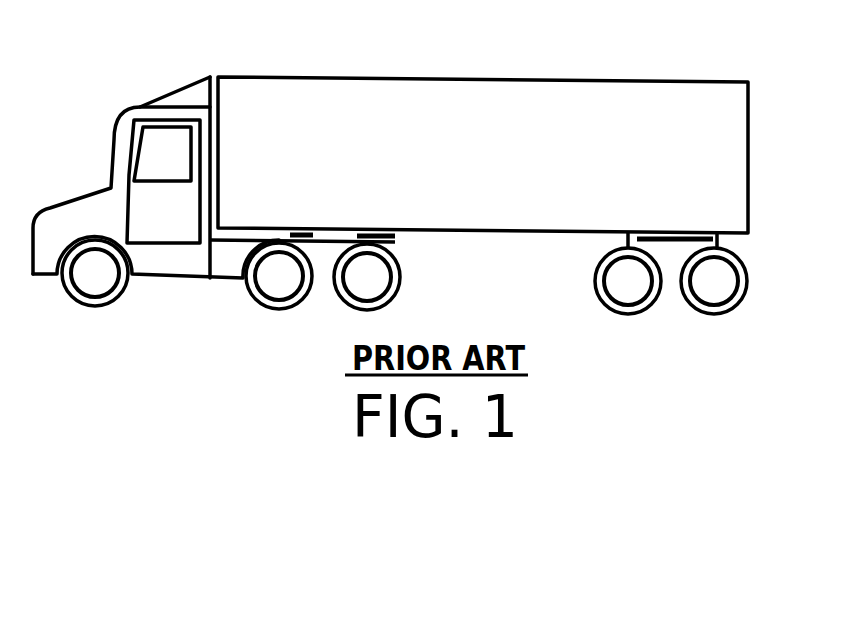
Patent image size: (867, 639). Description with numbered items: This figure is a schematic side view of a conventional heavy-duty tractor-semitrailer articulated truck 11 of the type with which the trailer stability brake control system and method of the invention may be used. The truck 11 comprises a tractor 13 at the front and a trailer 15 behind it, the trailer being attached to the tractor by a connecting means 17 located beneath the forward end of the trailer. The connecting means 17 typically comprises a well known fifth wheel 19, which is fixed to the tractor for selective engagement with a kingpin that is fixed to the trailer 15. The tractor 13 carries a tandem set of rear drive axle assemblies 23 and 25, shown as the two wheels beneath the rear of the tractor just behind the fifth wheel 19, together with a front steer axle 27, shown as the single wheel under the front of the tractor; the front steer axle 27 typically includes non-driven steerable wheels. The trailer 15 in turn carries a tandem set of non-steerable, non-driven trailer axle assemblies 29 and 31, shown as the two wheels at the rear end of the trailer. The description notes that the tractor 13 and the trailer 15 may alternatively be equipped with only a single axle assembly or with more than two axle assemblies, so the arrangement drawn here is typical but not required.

The tractor-trailer articulated truck 11 is at (401, 52).
The tractor 13 is at (169, 78).
The trailer 15 is at (531, 96).
The connecting means 17 is at (334, 212).
The fifth wheel 19 is at (313, 233).
The rear drive axle assembly 23 is at (285, 314).
The rear drive axle assembly 25 is at (398, 310).
The front steer axle 27 is at (98, 314).
The trailer axle assembly 29 is at (596, 308).
The trailer axle assembly 31 is at (714, 323).